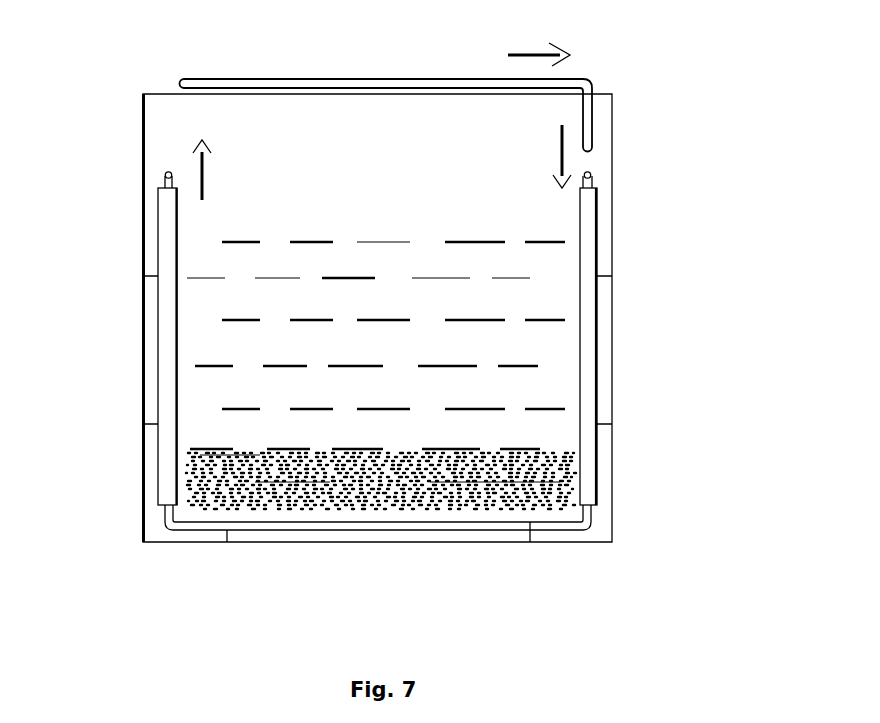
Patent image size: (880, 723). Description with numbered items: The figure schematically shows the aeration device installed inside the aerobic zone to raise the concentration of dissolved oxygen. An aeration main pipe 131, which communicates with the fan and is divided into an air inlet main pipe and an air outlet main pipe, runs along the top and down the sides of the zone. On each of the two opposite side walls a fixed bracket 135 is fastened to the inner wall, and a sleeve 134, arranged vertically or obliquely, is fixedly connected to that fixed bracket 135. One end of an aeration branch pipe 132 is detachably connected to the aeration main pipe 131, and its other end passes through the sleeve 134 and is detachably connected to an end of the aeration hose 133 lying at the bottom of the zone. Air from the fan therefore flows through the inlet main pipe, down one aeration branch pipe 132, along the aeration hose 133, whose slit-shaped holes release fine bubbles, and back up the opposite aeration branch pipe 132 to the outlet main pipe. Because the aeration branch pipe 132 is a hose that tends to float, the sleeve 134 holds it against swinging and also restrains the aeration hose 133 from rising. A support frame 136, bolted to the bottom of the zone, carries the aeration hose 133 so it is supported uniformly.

The aeration main pipe 131 is at (197, 80).
The aeration branch pipe 132 is at (167, 172).
The aeration hose 133 is at (382, 527).
The sleeve 134 is at (165, 217).
The fixed bracket 135 is at (145, 275).
The support frame 136 is at (530, 542).